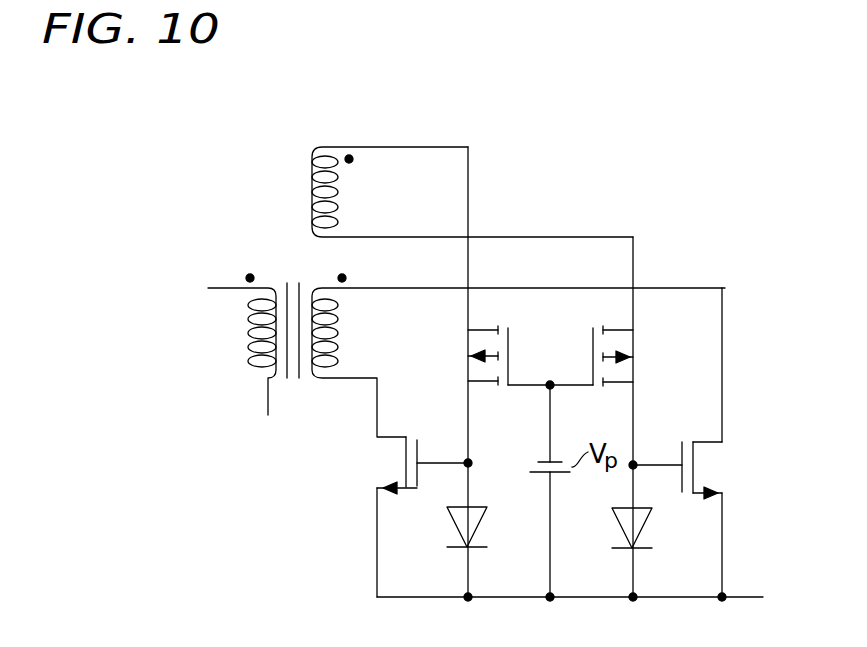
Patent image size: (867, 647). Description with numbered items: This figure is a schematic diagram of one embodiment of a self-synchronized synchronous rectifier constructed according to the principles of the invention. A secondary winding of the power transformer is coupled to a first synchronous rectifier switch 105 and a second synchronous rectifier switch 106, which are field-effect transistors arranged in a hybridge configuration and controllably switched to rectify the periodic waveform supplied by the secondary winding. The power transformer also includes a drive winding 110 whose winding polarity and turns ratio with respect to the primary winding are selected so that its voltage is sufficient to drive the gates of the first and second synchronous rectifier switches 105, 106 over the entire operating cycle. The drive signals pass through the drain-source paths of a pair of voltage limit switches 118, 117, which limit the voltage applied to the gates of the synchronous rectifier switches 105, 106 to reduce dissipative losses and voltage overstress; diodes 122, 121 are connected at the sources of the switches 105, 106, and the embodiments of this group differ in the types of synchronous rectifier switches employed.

The drive winding 110 is at (344, 196).
The transistor 118 is at (462, 376).
The transistor 117 is at (638, 370).
The second synchronous rectifier switch 106 is at (400, 463).
The first synchronous rectifier switch 105 is at (700, 462).
The diode 122 is at (455, 527).
The diode 121 is at (643, 527).